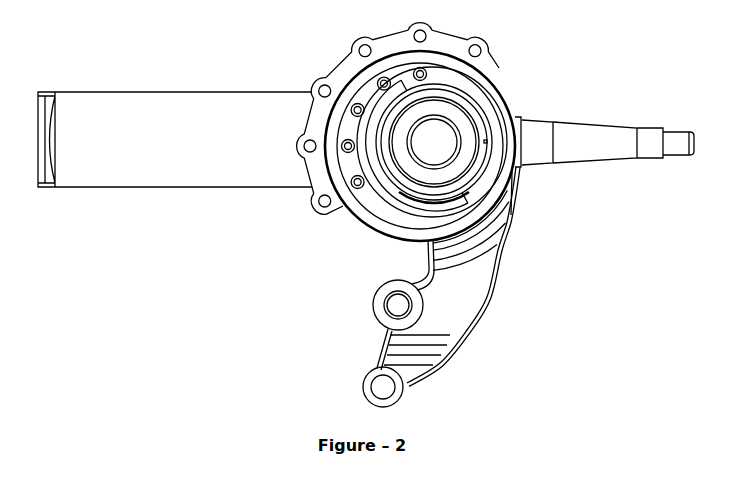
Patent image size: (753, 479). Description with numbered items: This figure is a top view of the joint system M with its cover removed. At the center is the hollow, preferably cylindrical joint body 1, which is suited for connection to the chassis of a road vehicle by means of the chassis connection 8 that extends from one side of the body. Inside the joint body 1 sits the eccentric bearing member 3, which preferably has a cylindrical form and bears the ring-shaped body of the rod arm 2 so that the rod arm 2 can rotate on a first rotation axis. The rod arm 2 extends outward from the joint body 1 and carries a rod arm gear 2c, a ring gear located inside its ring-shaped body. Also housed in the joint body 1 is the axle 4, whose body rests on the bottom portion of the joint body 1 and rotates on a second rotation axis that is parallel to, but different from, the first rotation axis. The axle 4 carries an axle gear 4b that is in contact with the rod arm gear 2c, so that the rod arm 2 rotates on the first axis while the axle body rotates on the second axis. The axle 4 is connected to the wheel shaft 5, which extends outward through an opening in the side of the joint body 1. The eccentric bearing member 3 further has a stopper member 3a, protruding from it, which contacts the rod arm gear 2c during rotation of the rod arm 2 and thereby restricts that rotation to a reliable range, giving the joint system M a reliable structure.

The joint system M is at (186, 40).
The joint body 1 is at (343, 75).
The rod arm 2 is at (465, 283).
The rod arm gear 2c is at (483, 182).
The eccentric bearing member 3 is at (368, 190).
The stopper member 3a is at (400, 202).
The axle 4 is at (453, 120).
The axle gear 4b is at (458, 188).
The wheel shaft 5 is at (585, 140).
The chassis connection 8 is at (179, 116).